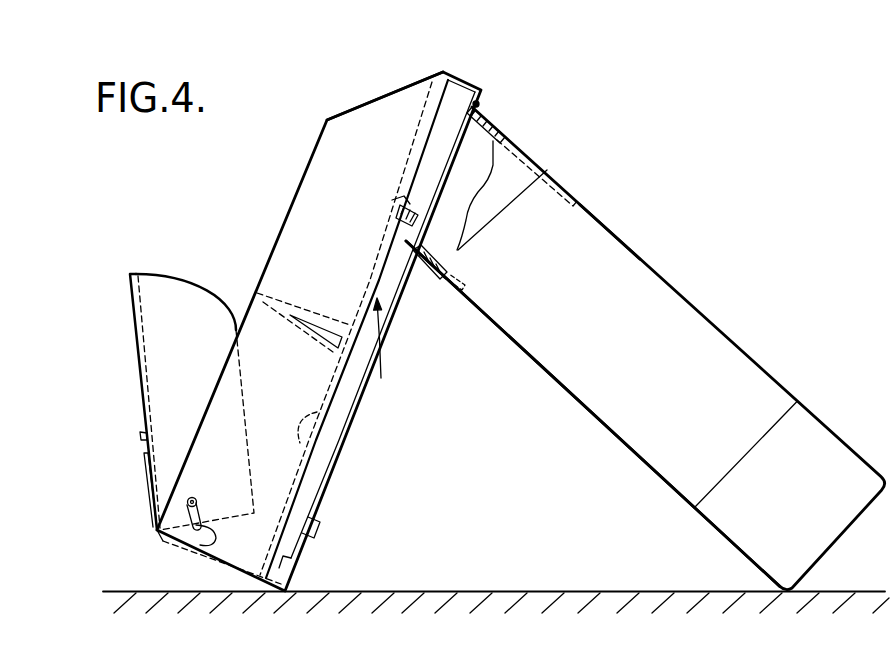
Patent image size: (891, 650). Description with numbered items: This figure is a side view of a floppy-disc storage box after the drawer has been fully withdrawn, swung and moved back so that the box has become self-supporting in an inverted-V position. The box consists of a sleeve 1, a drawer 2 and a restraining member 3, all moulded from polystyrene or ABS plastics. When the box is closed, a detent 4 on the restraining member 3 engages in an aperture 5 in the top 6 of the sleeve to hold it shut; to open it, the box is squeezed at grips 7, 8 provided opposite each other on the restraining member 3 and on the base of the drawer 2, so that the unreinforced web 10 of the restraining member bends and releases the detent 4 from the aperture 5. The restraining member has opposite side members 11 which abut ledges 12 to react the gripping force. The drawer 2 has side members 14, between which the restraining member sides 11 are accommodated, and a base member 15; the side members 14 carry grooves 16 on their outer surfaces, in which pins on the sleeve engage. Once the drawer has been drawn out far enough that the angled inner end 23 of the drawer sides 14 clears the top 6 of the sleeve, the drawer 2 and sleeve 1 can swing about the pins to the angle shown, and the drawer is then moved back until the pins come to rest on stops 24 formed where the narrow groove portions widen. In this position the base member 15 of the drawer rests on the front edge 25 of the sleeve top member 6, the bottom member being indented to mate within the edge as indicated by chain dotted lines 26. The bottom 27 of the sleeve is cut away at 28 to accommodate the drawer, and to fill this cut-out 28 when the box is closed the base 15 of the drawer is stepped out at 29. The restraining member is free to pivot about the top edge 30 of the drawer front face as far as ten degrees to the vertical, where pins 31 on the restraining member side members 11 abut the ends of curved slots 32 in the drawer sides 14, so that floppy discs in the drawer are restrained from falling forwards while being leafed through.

The sleeve 1 is at (645, 348).
The drawer 2 is at (290, 311).
The restraining member 3 is at (100, 402).
The detent 4 is at (140, 436).
The aperture 5 is at (550, 168).
The top of the sleeve 6 is at (614, 230).
The grip 7 is at (146, 487).
The grip 8 is at (303, 567).
The web 10 is at (140, 392).
The side members 11 is at (168, 317).
The ledges 12 is at (307, 442).
The side members 14 is at (327, 253).
The base member 15 is at (357, 403).
The grooves 16 is at (395, 348).
The angled inner end 23 is at (378, 97).
The stops 24 is at (394, 214).
The front edge 25 is at (474, 105).
The chain dotted lines 26 is at (470, 110).
The bottom of the sleeve 27 is at (527, 354).
The cut-out 28 is at (418, 253).
The step 29 is at (320, 527).
The top edge 30 is at (157, 531).
The pins 31 is at (193, 498).
The curved slots 32 is at (207, 550).